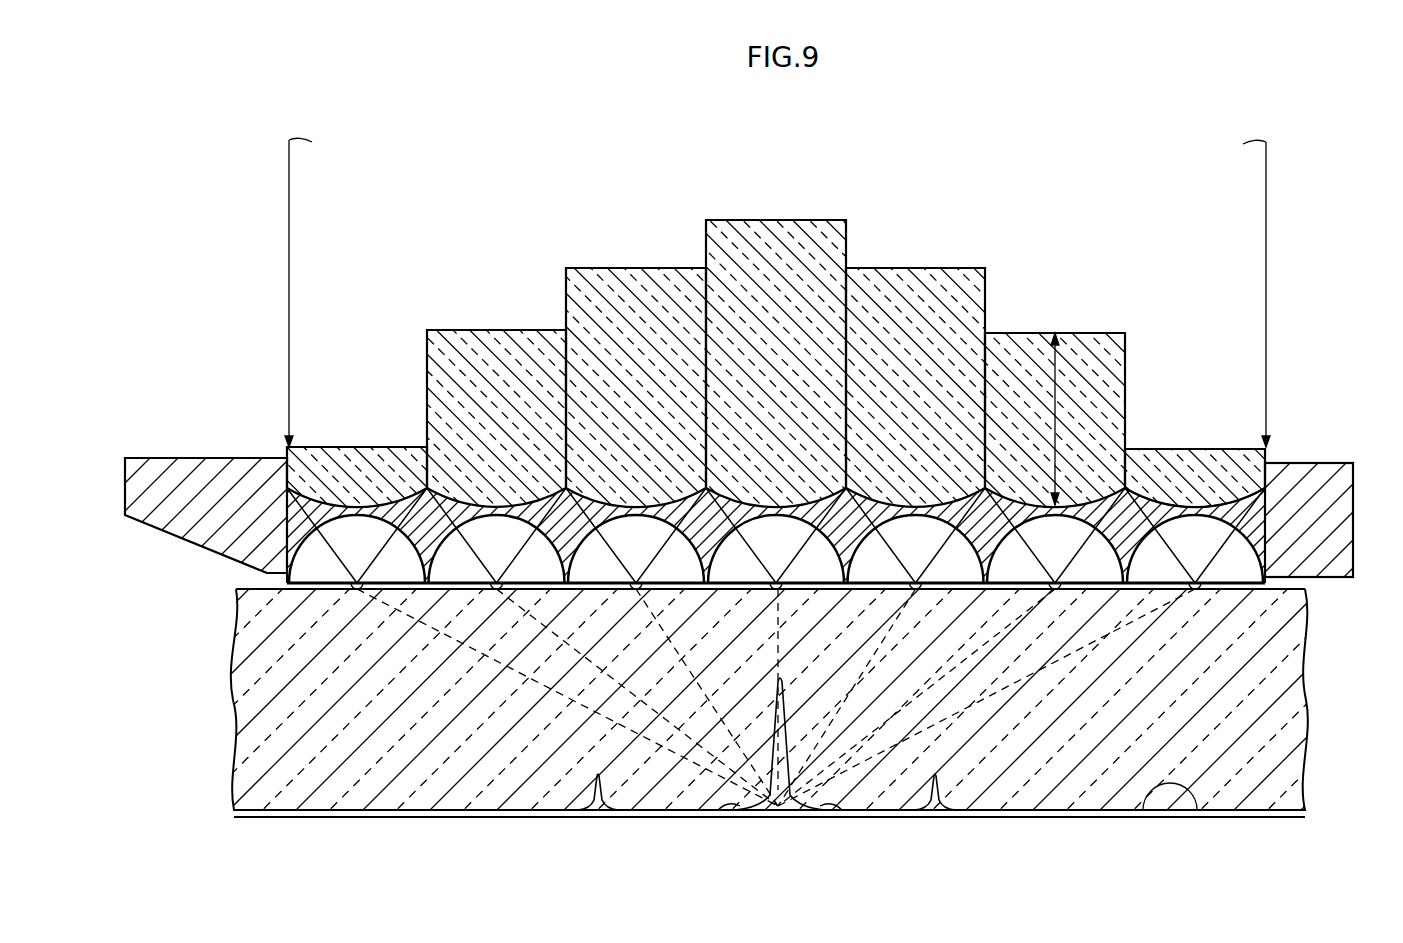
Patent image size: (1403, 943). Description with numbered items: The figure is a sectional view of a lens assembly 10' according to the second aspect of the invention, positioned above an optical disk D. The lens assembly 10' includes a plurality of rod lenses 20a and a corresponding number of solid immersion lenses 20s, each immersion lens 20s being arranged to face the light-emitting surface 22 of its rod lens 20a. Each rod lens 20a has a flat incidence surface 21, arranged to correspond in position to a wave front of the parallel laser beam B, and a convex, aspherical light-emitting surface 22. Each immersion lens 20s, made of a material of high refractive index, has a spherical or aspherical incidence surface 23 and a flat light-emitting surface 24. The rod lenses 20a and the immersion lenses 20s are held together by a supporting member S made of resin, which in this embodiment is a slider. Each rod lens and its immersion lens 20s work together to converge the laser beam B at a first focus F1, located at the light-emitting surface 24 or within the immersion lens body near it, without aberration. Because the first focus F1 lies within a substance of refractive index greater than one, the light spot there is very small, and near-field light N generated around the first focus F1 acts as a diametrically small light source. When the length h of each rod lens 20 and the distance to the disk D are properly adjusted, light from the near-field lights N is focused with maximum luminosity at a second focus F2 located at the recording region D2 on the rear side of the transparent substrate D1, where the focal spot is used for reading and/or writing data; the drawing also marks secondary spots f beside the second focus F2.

The rod lens 20 is at (814, 219).
The rod lens 20a is at (668, 268).
The solid immersion lens 20s is at (1270, 520).
The incidence surface 21 is at (625, 268).
The light-emitting surface 22 is at (1262, 513).
The incidence surface 23 is at (1170, 497).
The light-emitting surface 24 is at (1233, 600).
The lens assembly 10' is at (777, 292).
The laser beam B is at (1268, 232).
The supporting member S is at (210, 458).
The length of rod lens h is at (1056, 418).
The optical disk D is at (1340, 694).
The transparent substrate D1 is at (1217, 770).
The recording region D2 is at (1197, 813).
The near-field light N is at (1192, 592).
The first focus F1 is at (1255, 590).
The second focus F2 is at (781, 812).
The side lobe focus f is at (603, 787).